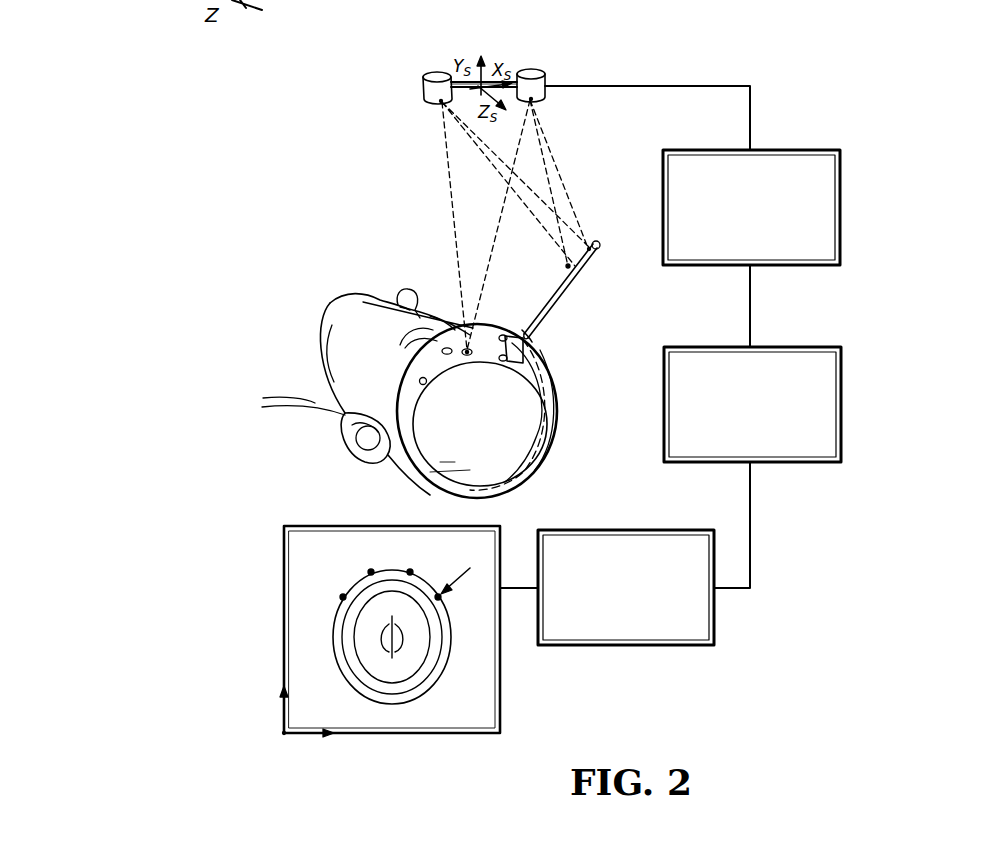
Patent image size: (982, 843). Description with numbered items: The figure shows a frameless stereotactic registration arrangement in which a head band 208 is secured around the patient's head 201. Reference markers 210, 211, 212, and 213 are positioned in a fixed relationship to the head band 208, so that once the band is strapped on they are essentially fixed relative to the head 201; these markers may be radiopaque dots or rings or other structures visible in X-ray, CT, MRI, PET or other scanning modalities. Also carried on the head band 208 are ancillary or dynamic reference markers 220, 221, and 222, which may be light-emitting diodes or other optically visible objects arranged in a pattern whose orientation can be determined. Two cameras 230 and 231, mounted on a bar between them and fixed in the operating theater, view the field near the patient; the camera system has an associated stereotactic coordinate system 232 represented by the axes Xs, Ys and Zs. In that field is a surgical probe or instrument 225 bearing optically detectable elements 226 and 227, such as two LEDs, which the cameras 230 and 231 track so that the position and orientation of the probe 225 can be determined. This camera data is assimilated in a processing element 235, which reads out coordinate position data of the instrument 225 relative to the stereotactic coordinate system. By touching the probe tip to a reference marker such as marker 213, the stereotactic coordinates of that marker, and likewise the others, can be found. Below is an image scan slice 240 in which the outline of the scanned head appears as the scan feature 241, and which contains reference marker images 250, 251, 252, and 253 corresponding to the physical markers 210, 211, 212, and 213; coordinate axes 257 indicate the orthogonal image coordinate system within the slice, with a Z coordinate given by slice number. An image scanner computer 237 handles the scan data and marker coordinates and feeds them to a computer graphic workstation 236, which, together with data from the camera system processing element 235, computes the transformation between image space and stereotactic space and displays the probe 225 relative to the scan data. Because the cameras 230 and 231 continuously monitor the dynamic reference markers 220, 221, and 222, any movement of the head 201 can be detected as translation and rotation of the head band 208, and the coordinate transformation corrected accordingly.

The patient's head 201 is at (536, 452).
The head band 208 is at (400, 470).
The reference marker 210 is at (407, 378).
The reference marker 211 is at (462, 351).
The reference marker 212 is at (505, 330).
The reference marker 213 is at (522, 330).
The dynamic reference marker 220 is at (400, 307).
The dynamic reference marker 221 is at (528, 346).
The dynamic reference marker 222 is at (545, 388).
The surgical probe 225 is at (548, 288).
The optically detectable element 226 is at (560, 277).
The optically detectable element 227 is at (605, 258).
The camera 230 is at (423, 85).
The camera 231 is at (545, 79).
The stereotactic coordinate system 232 is at (478, 82).
The processing element 235 is at (786, 150).
The computer graphic workstation 236 is at (823, 347).
The image scanner computer 237 is at (638, 530).
The image scan slice 240 is at (283, 645).
The scan slice of head 241 is at (332, 643).
The reference marker image 250 is at (343, 597).
The reference marker image 251 is at (371, 572).
The reference marker image 252 is at (410, 572).
The reference marker image 253 is at (438, 597).
The coordinate axes 257 is at (285, 735).